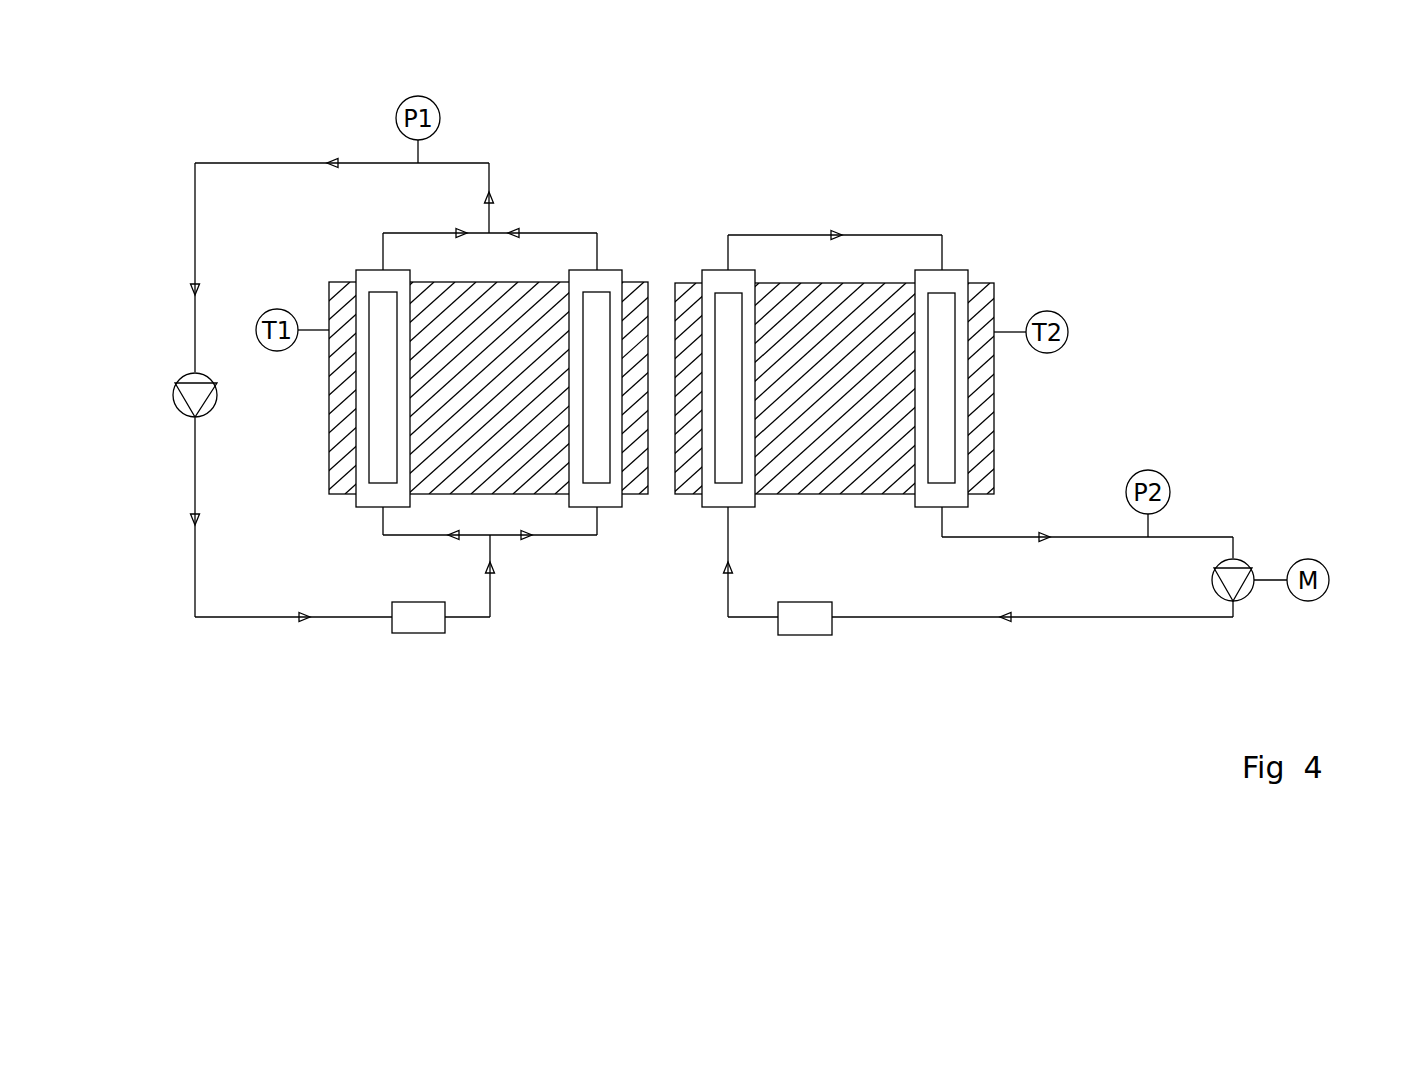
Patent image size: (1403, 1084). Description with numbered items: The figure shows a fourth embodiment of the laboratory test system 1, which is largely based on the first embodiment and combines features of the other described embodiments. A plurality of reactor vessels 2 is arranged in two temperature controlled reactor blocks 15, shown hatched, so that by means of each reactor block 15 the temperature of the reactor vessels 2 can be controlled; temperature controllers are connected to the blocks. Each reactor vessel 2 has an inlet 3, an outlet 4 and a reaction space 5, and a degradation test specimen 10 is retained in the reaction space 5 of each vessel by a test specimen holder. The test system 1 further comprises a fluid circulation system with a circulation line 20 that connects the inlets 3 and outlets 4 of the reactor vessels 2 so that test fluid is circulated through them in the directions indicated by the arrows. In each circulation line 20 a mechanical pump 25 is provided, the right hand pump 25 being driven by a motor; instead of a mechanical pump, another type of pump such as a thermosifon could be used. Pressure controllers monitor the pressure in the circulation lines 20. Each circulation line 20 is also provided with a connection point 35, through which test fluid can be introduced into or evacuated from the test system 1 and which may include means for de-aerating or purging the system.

The test system 1 is at (877, 155).
The reactor vessel 2 is at (412, 269).
The inlet 3 is at (381, 508).
The outlet 4 is at (384, 269).
The reaction space 5 is at (360, 497).
The degradation test specimen 10 is at (385, 310).
The reactor block 15 is at (343, 396).
The circulation line 20 is at (235, 618).
The mechanical pump 25 is at (183, 372).
The connection point 35 is at (407, 635).